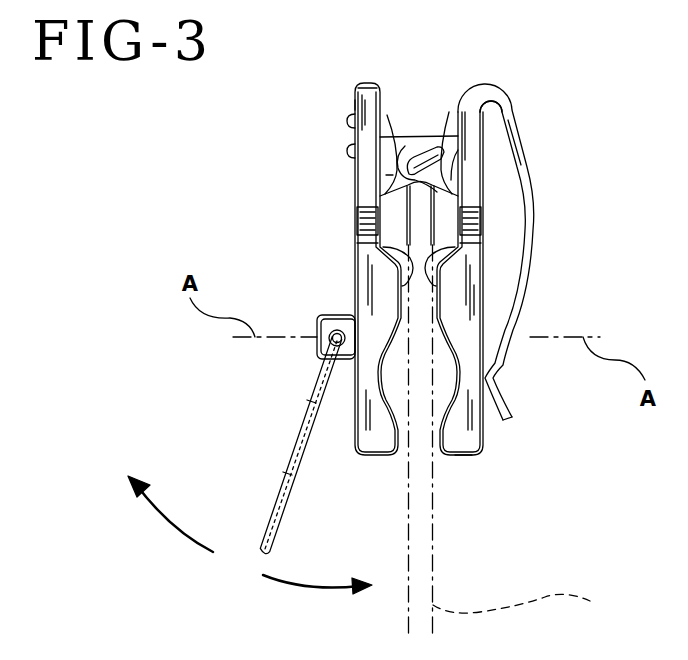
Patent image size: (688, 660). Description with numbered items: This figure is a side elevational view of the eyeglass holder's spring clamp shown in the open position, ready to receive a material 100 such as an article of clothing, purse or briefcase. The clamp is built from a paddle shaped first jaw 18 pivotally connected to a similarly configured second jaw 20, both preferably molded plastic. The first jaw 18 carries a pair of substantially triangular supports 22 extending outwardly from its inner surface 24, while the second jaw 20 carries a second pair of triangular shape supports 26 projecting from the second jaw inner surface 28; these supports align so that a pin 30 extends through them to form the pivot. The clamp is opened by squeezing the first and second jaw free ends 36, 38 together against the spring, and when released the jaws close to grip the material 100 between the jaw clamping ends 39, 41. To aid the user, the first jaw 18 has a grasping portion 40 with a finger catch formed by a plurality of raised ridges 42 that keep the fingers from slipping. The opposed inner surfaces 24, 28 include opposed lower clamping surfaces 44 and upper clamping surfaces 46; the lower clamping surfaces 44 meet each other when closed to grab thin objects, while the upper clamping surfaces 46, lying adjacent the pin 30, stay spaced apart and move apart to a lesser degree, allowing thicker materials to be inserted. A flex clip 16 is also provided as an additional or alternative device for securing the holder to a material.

The flex clip 16 is at (520, 118).
The first jaw 18 is at (363, 295).
The second jaw 20 is at (467, 315).
The triangular supports 22 is at (388, 176).
The inner surface 24 is at (388, 138).
The triangular shape supports 26 is at (460, 183).
The second jaw inner surface 28 is at (452, 160).
The pin 30 is at (423, 152).
The first jaw free end 36 is at (372, 95).
The second jaw free end 38 is at (487, 128).
The jaw clamping end 39 is at (365, 407).
The grasping portion 40 is at (355, 100).
The jaw clamping end 41 is at (467, 417).
The raised ridges 42 is at (350, 120).
The lower clamping surfaces 44 is at (400, 453).
The upper clamping surfaces 46 is at (382, 250).
The material 100 is at (533, 602).